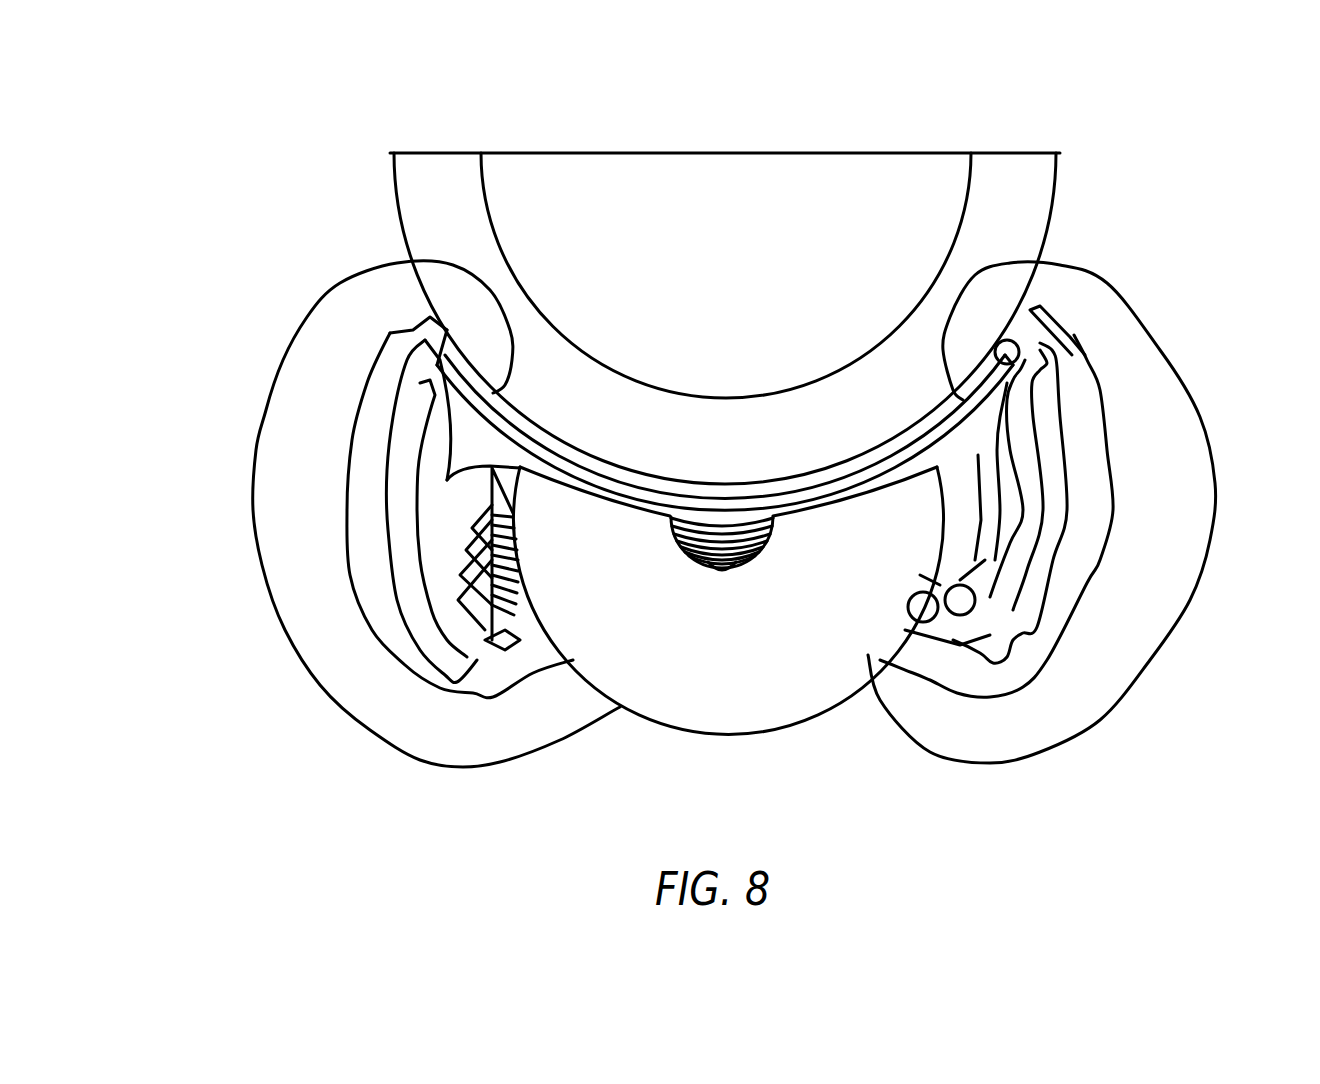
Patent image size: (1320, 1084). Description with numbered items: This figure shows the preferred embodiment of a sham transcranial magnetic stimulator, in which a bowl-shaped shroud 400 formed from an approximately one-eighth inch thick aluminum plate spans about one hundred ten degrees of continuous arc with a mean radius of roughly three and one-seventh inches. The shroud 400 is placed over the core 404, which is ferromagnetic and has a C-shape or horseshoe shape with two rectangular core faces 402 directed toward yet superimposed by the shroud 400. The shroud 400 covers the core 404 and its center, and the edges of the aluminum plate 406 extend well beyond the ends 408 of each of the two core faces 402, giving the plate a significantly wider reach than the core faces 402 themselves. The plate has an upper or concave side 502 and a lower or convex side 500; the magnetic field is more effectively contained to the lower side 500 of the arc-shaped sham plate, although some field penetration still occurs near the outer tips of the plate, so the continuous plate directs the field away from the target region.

The bowl-shaped shroud 400 is at (952, 422).
The core faces 402 is at (497, 635).
The core 404 is at (792, 687).
The edges of the aluminum plate 406 is at (447, 362).
The ends of the core faces 408 is at (495, 470).
The lower or convex side 500 is at (648, 503).
The upper or concave side 502 is at (588, 470).